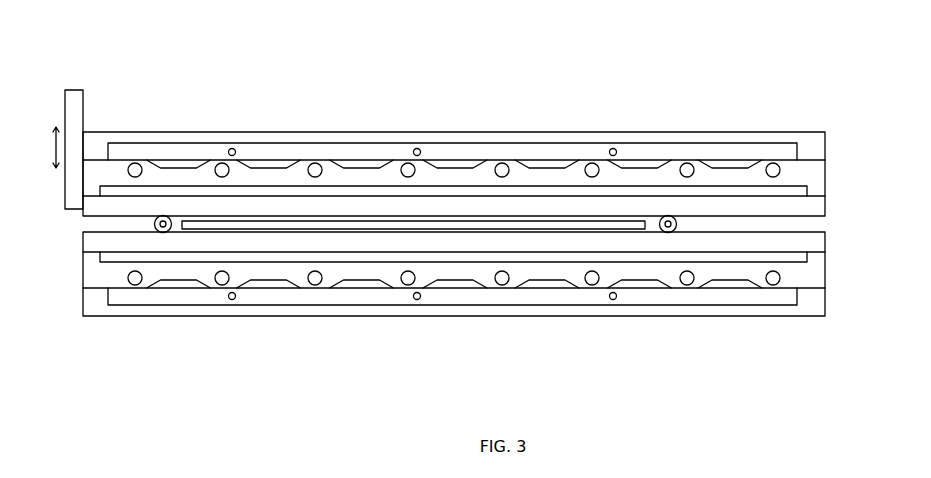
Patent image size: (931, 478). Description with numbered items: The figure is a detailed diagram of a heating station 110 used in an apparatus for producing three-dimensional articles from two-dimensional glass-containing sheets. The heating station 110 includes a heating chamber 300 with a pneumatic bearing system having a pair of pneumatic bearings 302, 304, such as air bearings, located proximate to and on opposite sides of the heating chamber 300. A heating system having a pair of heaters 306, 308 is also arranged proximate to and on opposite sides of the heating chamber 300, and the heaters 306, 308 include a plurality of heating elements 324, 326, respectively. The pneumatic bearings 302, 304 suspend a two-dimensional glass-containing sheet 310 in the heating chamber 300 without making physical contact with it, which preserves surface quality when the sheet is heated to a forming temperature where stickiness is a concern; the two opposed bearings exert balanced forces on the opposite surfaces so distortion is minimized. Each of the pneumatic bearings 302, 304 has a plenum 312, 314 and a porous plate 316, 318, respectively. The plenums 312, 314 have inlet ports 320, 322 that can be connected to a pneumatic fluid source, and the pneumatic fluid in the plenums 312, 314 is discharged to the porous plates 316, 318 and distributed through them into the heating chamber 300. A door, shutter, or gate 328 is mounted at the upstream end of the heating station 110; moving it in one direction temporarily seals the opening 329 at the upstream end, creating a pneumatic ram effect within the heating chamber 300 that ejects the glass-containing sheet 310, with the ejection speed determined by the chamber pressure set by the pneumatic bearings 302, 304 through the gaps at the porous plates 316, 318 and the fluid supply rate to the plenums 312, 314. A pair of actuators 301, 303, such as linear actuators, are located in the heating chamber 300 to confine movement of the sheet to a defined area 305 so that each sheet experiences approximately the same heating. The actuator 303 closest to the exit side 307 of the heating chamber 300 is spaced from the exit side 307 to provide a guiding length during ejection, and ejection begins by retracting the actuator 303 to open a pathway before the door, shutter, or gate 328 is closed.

The heating station 110 is at (431, 106).
The heating chamber 300 is at (138, 225).
The actuator 301 is at (164, 233).
The pneumatic bearing 302 is at (728, 206).
The actuator 303 is at (669, 233).
The pneumatic bearing 304 is at (735, 297).
The defined area 305 is at (278, 232).
The heater 306 is at (803, 170).
The exit side 307 is at (827, 227).
The heater 308 is at (797, 278).
The 2D glass-containing sheet 310 is at (540, 225).
The plenum 312 is at (642, 152).
The plenum 314 is at (640, 297).
The porous plate 316 is at (368, 205).
The porous plate 318 is at (365, 242).
The inlet port 320 is at (231, 148).
The inlet port 322 is at (417, 300).
The heating elements 324 is at (134, 163).
The heating elements 326 is at (502, 285).
The door, shutter, or gate 328 is at (73, 98).
The opening 329 is at (83, 224).